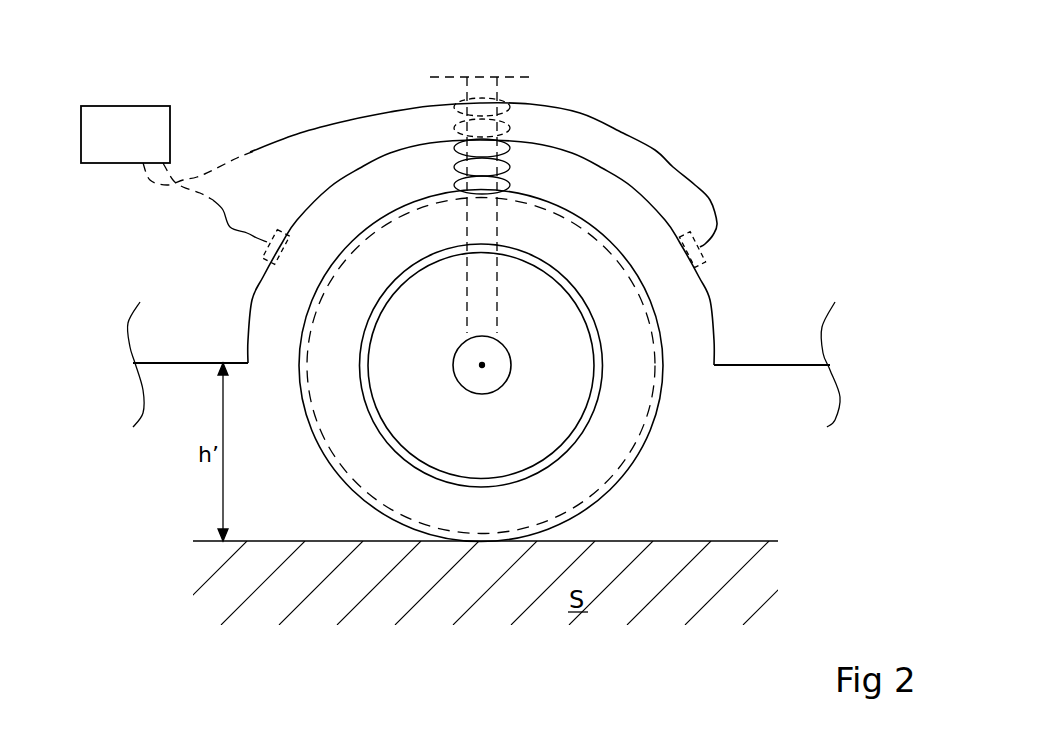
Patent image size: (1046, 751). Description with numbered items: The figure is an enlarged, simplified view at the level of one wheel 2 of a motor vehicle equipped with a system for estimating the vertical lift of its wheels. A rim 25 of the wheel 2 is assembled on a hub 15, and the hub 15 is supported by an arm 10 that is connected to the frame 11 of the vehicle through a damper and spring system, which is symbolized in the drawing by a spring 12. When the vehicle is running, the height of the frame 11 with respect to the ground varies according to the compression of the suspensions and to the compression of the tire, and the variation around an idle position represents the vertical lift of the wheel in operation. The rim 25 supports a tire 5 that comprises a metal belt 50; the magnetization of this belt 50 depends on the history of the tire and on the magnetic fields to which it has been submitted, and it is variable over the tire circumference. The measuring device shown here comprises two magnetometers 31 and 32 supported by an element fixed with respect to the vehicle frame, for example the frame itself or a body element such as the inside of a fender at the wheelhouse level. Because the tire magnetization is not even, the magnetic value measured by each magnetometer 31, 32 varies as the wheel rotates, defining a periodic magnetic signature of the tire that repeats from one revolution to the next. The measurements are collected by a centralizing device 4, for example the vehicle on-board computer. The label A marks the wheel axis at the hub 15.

The wheel 2 is at (539, 426).
The centralizing device 4 is at (150, 122).
The tire 5 is at (617, 430).
The arm 10 is at (490, 147).
The frame 11 is at (705, 298).
The spring 12 is at (510, 168).
The hub 15 is at (498, 357).
The rim 25 is at (437, 445).
The magnetometer 31 is at (700, 248).
The magnetometer 32 is at (258, 250).
The metal belt 50 is at (655, 390).
The wheel axis A is at (482, 365).